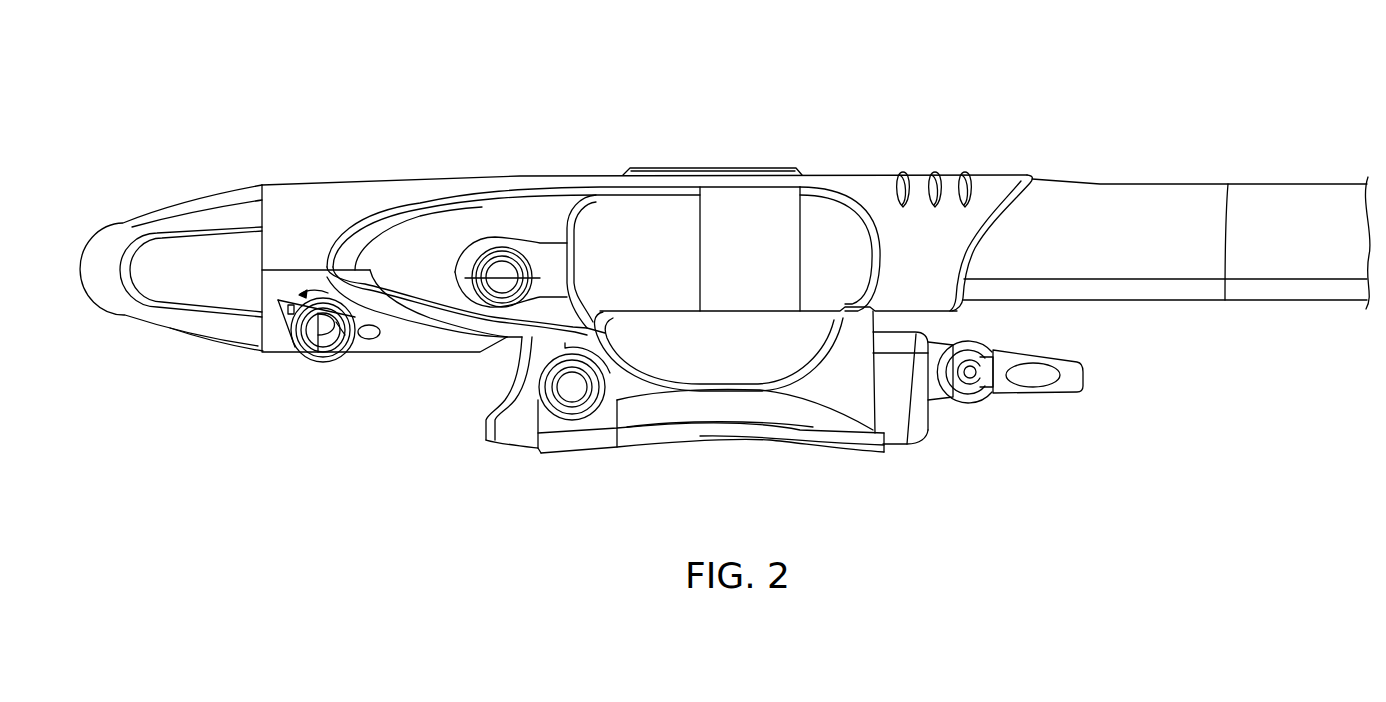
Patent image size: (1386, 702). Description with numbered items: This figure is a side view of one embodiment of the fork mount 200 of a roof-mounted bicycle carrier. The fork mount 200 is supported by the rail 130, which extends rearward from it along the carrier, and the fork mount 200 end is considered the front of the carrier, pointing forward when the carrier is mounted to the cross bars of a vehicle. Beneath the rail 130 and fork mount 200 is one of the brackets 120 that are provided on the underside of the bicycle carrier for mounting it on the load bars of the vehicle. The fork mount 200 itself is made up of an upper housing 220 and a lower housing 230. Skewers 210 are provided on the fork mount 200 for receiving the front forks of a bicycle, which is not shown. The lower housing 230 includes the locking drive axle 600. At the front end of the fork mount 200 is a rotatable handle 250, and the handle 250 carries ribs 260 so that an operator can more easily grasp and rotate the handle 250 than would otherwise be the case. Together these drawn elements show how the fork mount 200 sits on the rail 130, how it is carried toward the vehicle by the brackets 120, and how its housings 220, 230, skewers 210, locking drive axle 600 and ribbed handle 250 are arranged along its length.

The fork mount 200 is at (156, 79).
The rotatable handle 250 is at (124, 222).
The ribs 260 is at (233, 217).
The upper housing 220 is at (322, 198).
The skewers 210 is at (503, 270).
The rail 130 is at (1082, 180).
The lower housing 230 is at (272, 292).
The locking drive axle 600 is at (354, 336).
The brackets 120 is at (708, 443).